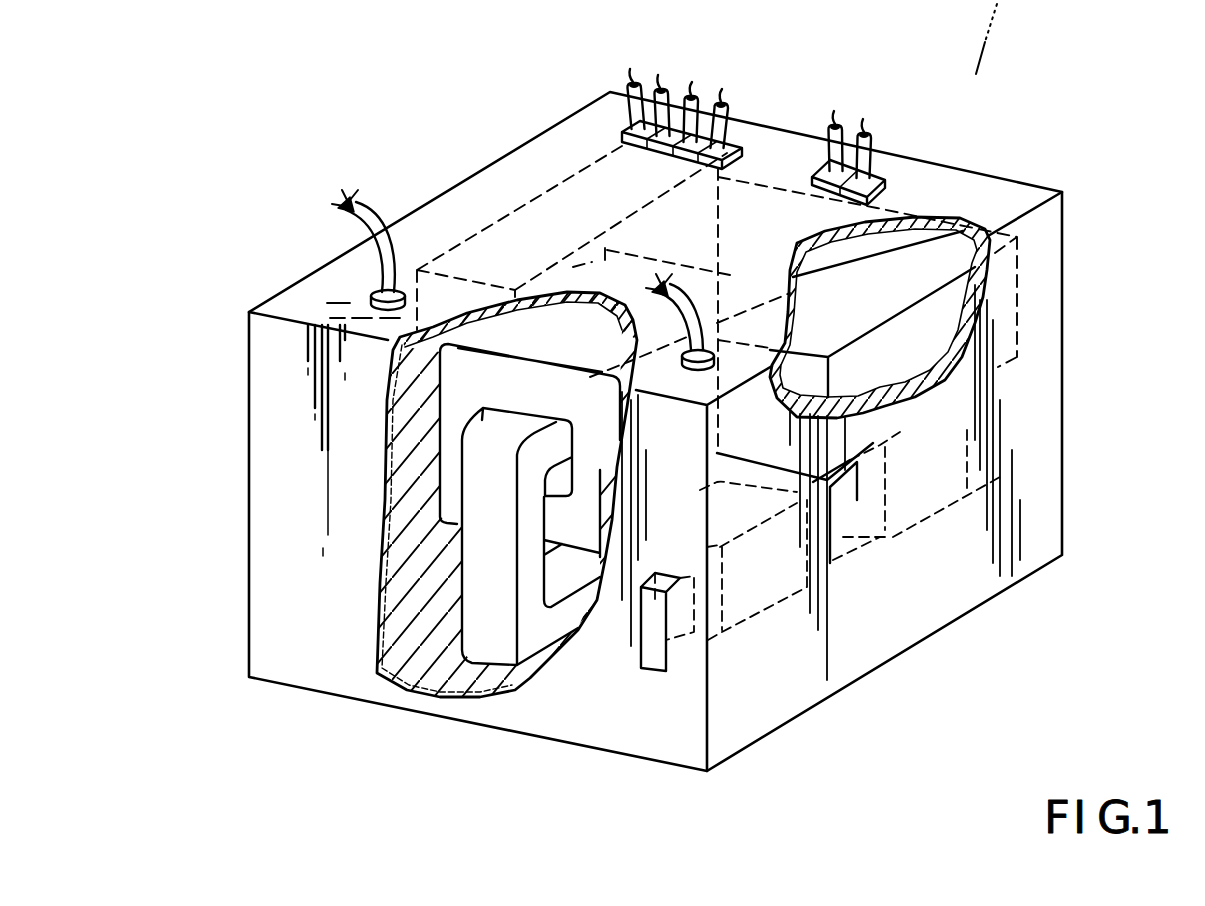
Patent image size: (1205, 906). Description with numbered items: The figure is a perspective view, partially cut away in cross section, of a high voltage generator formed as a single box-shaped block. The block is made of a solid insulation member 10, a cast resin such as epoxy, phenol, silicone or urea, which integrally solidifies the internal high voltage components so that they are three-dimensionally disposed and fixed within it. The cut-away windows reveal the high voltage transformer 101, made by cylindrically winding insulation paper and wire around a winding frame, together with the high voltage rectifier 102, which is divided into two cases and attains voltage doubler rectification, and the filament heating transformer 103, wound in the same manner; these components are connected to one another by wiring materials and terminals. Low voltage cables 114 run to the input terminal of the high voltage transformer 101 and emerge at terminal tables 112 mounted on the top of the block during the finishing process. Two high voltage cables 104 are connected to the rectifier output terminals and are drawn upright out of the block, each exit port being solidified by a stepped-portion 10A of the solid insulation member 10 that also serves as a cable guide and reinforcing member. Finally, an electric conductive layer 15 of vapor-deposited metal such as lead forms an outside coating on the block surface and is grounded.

The solid insulation member 10 is at (940, 362).
The stepped-portion 10A is at (368, 295).
The electric conductive layer 15 is at (990, 232).
The high voltage transformer 101 is at (460, 383).
The high voltage rectifier 102 is at (540, 228).
The filament heating transformer 103 is at (950, 471).
The high voltage cable 104 is at (349, 216).
The terminal table 112 is at (768, 135).
The low voltage cable 114 is at (730, 104).